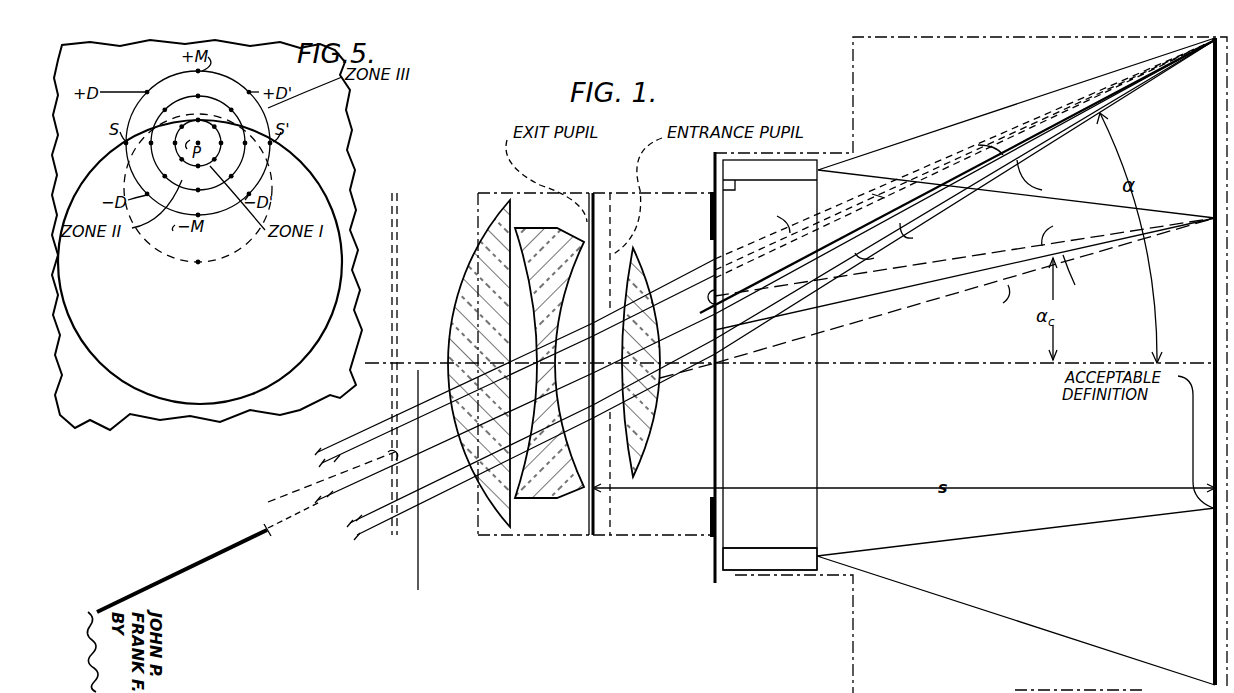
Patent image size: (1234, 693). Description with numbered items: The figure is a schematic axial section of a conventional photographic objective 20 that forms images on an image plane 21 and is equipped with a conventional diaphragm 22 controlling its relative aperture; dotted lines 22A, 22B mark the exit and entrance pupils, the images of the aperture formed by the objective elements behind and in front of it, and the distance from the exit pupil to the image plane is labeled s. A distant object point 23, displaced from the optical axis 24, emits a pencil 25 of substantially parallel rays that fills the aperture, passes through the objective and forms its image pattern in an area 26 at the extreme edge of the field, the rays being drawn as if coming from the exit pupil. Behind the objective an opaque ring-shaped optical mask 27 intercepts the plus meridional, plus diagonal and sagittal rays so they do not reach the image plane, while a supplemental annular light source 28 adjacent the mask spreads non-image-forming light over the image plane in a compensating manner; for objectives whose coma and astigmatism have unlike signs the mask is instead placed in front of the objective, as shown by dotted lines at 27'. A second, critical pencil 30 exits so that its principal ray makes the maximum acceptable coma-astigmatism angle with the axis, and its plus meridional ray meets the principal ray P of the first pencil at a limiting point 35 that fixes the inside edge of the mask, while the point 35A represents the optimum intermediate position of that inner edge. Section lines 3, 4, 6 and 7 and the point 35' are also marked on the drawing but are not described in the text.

In FIG. 1, the section line 3-3 (exit pupil plane) 3 is at (417, 378).
In FIG. 1, the section line 4-4 (entrance pupil plane) 4 is at (713, 157).
In FIG. 1, the image point / section line 6- 6 is at (1212, 41).
In FIG. 1, the critical image point / section line 7- 7 is at (1212, 186).
In FIG. 1, the photographic objective 20 is at (470, 260).
In FIG. 1, the image plane 21 is at (1212, 142).
In FIG. 1, the diaphragm 22 is at (596, 506).
In FIG. 1, the exit pupil 22A is at (588, 528).
In FIG. 1, the entrance pupil 22B is at (612, 528).
In FIG. 1, the distant object point 23 is at (93, 611).
In FIG. 5, the optical axis 24 is at (198, 262).
In FIG. 1, the optical axis 24 is at (840, 363).
In FIG. 1, the pencil of light rays 25 is at (449, 500).
In FIG. 1, the image area 26 is at (1212, 68).
In FIG. 1, the optical mask 27 is at (768, 365).
In FIG. 1, the optical mask in front of the objective 27' is at (420, 364).
In FIG. 1, the supplemental annular light source 28 is at (757, 562).
In FIG. 5, the critical pencil 30 is at (150, 247).
In FIG. 1, the critical pencil 30 is at (1005, 348).
In FIG. 1, the limiting point 35 is at (730, 285).
In FIG. 1, the exit pupil point 35' is at (423, 464).
In FIG. 5, the optimum intermediate position point 35A is at (198, 120).